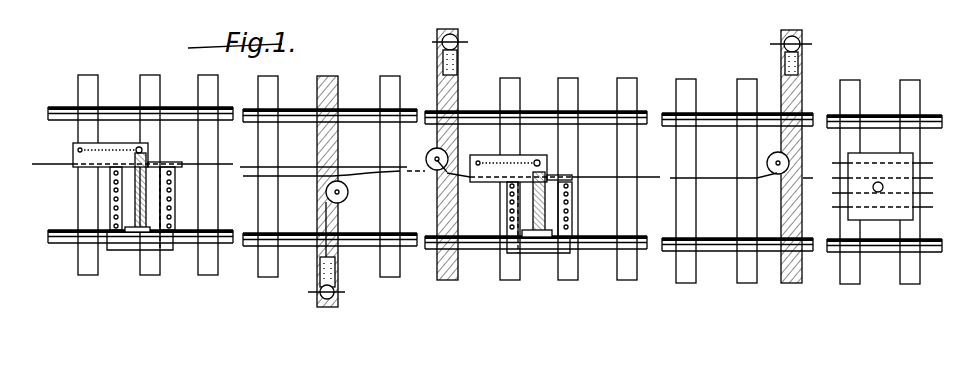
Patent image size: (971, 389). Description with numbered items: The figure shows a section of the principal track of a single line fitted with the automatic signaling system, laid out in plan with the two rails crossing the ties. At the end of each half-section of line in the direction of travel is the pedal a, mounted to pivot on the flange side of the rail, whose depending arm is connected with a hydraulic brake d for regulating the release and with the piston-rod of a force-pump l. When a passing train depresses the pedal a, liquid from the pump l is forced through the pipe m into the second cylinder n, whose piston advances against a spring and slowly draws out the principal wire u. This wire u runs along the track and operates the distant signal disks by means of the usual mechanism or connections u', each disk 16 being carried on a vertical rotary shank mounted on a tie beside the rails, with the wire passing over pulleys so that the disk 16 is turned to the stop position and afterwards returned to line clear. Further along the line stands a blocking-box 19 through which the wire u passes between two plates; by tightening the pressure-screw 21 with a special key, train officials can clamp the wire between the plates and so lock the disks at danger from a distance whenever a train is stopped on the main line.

The second cylinder n is at (112, 158).
The pipe m is at (142, 154).
The force-pump l is at (150, 178).
The hydraulic brake d is at (150, 210).
The pedal a is at (538, 238).
The principal wire u is at (422, 178).
The connecting mechanism u' is at (646, 113).
The disk 16 is at (458, 40).
The blocking-box 19 is at (914, 156).
The pressure-screw 21 is at (880, 182).